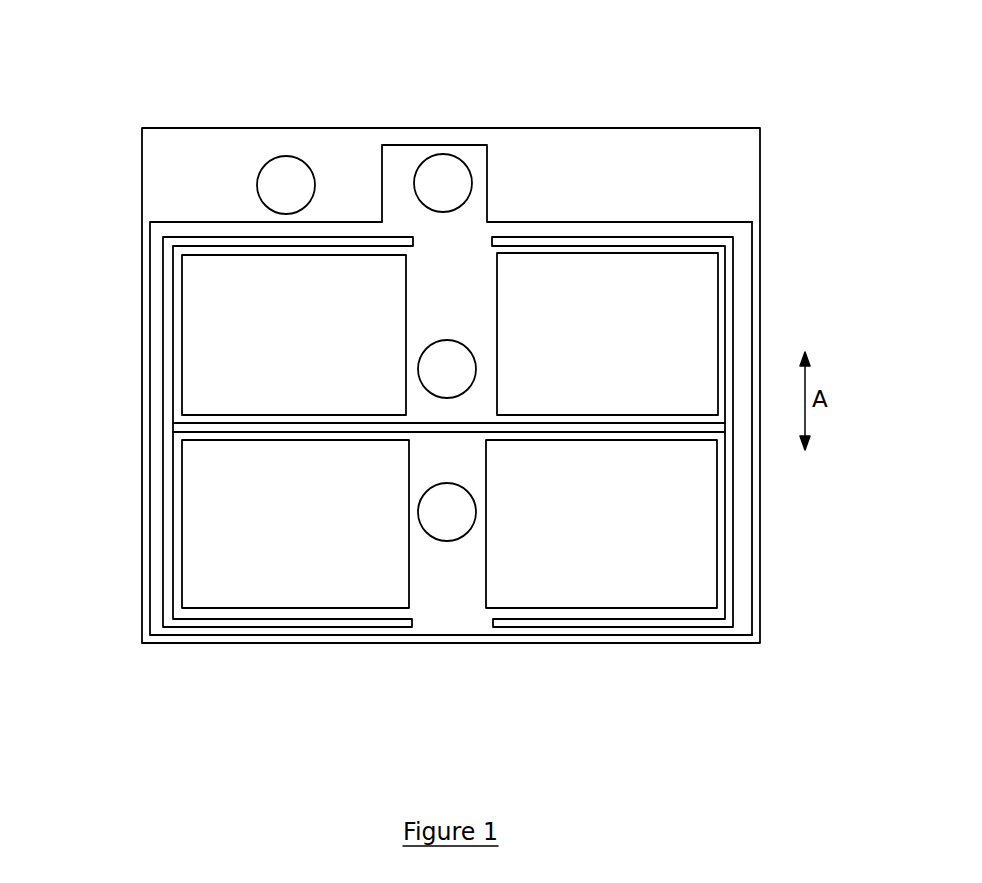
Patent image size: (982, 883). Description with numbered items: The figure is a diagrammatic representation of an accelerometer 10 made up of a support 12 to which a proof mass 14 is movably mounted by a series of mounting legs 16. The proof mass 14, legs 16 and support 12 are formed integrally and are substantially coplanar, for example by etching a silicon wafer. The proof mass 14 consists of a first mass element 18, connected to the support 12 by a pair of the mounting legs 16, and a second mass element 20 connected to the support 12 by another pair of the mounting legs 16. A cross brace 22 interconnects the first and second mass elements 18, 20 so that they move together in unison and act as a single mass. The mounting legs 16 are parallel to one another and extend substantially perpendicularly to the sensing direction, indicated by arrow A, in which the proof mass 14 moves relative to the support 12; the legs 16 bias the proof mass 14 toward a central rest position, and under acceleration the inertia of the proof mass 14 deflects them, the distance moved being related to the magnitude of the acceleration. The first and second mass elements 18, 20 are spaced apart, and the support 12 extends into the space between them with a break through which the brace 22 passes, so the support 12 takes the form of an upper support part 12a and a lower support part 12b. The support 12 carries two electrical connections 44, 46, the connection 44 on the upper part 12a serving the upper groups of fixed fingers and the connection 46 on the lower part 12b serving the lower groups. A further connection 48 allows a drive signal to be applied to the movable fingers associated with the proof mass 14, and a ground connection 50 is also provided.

The accelerometer 10 is at (593, 111).
The support 12 is at (470, 278).
The upper support part 12a is at (417, 277).
The lower support part 12b is at (447, 580).
The proof mass 14 is at (731, 493).
The mounting legs 16 is at (663, 242).
The first mass element 18 is at (731, 325).
The second mass element 20 is at (167, 502).
The cross brace 22 is at (208, 428).
The electrical connection 44 is at (447, 369).
The electrical connection 46 is at (447, 512).
The connection 48 is at (443, 183).
The ground connection 50 is at (287, 183).